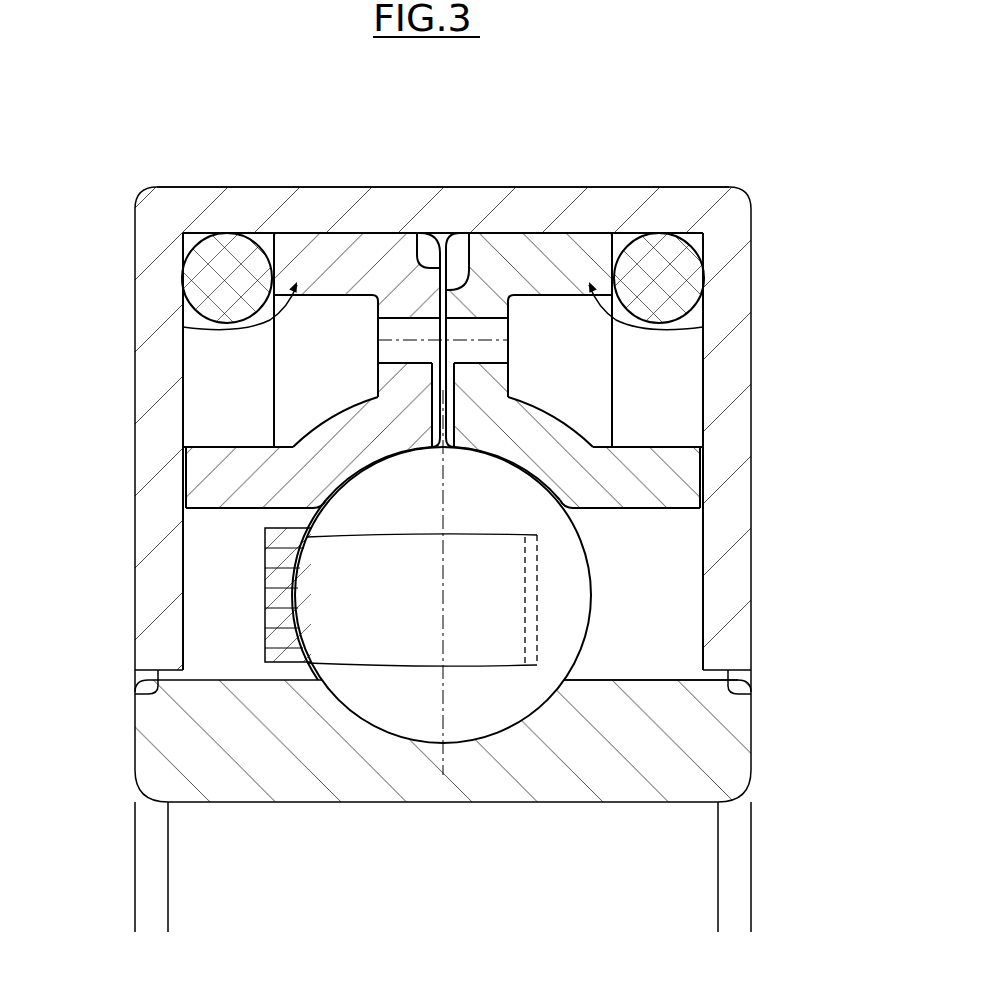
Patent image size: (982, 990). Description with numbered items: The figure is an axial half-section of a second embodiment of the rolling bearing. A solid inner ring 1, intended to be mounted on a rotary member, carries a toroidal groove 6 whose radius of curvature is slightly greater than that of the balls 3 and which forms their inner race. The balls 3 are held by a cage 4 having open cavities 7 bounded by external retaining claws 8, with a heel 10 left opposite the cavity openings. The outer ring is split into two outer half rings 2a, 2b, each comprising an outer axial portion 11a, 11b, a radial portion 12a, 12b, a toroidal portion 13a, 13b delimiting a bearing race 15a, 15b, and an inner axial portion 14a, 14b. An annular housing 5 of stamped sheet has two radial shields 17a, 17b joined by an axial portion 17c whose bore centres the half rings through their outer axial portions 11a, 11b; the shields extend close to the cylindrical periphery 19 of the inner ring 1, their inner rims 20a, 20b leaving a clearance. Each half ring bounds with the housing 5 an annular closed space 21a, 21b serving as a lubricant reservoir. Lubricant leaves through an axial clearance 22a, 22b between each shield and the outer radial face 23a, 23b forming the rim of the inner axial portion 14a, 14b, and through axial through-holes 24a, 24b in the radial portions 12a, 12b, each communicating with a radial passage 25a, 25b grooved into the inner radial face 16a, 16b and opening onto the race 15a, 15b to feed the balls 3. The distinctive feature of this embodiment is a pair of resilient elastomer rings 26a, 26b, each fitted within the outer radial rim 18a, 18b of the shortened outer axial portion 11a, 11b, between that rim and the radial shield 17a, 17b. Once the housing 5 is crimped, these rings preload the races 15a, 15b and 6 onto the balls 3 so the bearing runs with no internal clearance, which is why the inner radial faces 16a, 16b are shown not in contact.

The inner ring 1 is at (290, 790).
The outer half ring 2a is at (703, 327).
The outer half ring 2b is at (183, 327).
The balls 3 is at (567, 617).
The cage 4 is at (270, 625).
The annular housing 5 is at (505, 185).
The toroidal groove 6 is at (478, 713).
The open cavities 7 is at (402, 655).
The external retaining claws 8 is at (533, 558).
The heel 10 is at (278, 551).
The outer axial portion 11a is at (567, 250).
The outer axial portion 11b is at (320, 250).
The radial portion 12a is at (495, 309).
The radial portion 12b is at (390, 309).
The toroidal portion 13a is at (538, 437).
The toroidal portion 13b is at (348, 437).
The inner axial portion 14a is at (659, 470).
The inner axial portion 14b is at (228, 470).
The bearing race 15a is at (518, 468).
The bearing race 15b is at (367, 468).
The inner radial face 16a is at (418, 258).
The inner radial face 16b is at (471, 287).
The radial shield 17a is at (729, 367).
The radial shield 17b is at (157, 367).
The axial portion 17c is at (453, 200).
The outer radial rim 18a is at (703, 243).
The outer radial rim 18b is at (183, 243).
The cylindrical periphery 19 is at (660, 677).
The inner rim 20a is at (751, 689).
The inner rim 20b is at (135, 689).
The annular closed space 21a is at (683, 371).
The annular closed space 21b is at (247, 371).
The axial clearance 22a is at (703, 504).
The axial clearance 22b is at (183, 504).
The outer radial face 23a is at (703, 474).
The outer radial face 23b is at (183, 474).
The axial through-holes 24a is at (492, 354).
The axial through-holes 24b is at (393, 354).
The radial passage 25a is at (454, 397).
The radial passage 25b is at (432, 397).
The resilient element 26a is at (677, 283).
The resilient element 26b is at (209, 283).